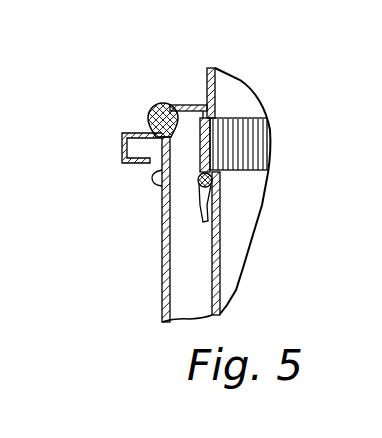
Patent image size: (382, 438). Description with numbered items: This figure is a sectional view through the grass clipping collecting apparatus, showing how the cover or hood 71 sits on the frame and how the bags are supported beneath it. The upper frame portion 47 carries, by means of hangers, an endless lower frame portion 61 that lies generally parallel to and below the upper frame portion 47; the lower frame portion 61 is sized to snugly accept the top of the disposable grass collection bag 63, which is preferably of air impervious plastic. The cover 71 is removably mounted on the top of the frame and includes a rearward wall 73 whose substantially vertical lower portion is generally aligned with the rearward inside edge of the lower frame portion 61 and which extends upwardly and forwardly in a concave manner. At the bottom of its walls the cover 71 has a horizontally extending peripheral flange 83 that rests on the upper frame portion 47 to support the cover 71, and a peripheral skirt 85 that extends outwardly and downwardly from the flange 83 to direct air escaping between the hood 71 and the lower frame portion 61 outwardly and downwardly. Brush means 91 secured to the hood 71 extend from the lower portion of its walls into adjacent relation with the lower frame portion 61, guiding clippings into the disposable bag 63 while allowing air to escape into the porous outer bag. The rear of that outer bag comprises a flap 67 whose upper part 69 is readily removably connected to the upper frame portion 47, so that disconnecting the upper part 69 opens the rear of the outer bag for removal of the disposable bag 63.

The upper frame portion 47 is at (155, 111).
The lower frame portion 61 is at (213, 184).
The disposable grass collection bag 63 is at (218, 249).
The flap 67 is at (162, 263).
The upper part of flap 69 is at (152, 177).
The cover 71 is at (240, 97).
The rearward wall 73 is at (200, 104).
The peripheral flange 83 is at (195, 104).
The peripheral skirt 85 is at (125, 148).
The brush means 91 is at (238, 148).